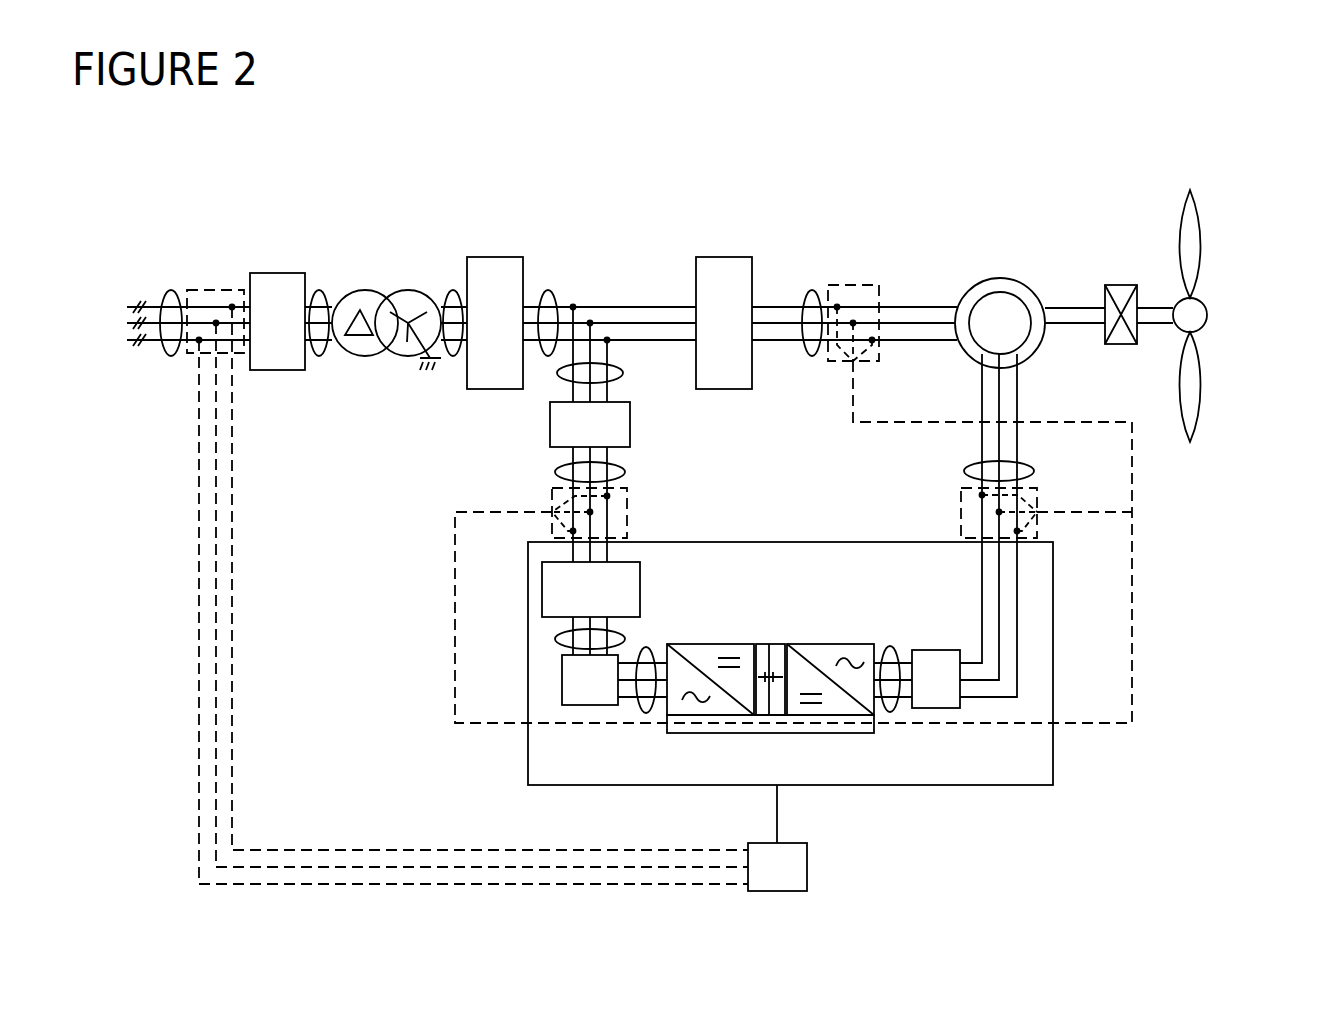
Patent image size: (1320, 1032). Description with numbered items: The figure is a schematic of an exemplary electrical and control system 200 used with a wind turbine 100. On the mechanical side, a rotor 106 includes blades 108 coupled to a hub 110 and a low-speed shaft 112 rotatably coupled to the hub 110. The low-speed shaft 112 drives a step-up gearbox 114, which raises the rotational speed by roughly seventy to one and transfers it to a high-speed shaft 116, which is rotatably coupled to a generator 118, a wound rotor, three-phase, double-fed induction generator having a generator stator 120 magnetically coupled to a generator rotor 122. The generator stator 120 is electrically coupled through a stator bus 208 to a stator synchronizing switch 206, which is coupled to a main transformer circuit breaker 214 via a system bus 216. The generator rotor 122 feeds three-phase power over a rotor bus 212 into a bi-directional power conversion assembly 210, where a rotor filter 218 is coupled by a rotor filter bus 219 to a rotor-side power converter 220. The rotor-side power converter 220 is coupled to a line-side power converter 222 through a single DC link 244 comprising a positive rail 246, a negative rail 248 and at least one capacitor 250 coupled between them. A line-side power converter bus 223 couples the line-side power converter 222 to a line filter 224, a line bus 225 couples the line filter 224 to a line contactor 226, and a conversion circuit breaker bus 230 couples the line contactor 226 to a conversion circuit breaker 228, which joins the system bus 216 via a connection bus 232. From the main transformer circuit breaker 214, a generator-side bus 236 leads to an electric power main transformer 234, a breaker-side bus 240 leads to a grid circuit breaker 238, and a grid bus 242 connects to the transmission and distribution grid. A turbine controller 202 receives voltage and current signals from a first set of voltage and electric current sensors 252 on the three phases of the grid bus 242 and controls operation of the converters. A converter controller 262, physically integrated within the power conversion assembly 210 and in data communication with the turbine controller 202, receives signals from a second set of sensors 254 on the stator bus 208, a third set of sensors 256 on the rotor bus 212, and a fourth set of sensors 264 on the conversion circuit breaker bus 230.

The wind turbine 100 is at (1177, 172).
The rotor 106 is at (1215, 292).
The blades 108 is at (1200, 250).
The hub 110 is at (1208, 315).
The low-speed shaft 112 is at (1153, 306).
The step-up gearbox 114 is at (1118, 285).
The high-speed shaft 116 is at (1073, 305).
The generator 118 is at (1001, 275).
The generator stator 120 is at (998, 277).
The generator rotor 122 is at (992, 305).
The electrical and control system 200 is at (222, 157).
The turbine controller 202 is at (757, 880).
The stator synchronizing switch 206 is at (724, 257).
The stator bus 208 is at (812, 290).
The power conversion assembly 210 is at (1053, 658).
The rotor bus 212 is at (1034, 471).
The main transformer circuit breaker 214 is at (493, 257).
The system bus 216 is at (548, 290).
The rotor filter 218 is at (932, 660).
The rotor filter bus 219 is at (890, 647).
The rotor-side power converter 220 is at (878, 717).
The line-side power converter 222 is at (670, 720).
The line-side power converter bus 223 is at (648, 647).
The line filter 224 is at (562, 680).
The line bus 225 is at (555, 639).
The line contactor 226 is at (542, 590).
The conversion circuit breaker 228 is at (630, 422).
The conversion circuit breaker bus 230 is at (622, 472).
The connection bus 232 is at (622, 373).
The electric power main transformer 234 is at (403, 290).
The generator-side bus 236 is at (453, 285).
The grid circuit breaker 238 is at (270, 273).
The breaker-side bus 240 is at (319, 290).
The grid bus 242 is at (171, 290).
The DC link 244 is at (751, 604).
The positive rail 246 is at (774, 648).
The negative rail 248 is at (778, 722).
The capacitor 250 is at (765, 672).
The first set of voltage and electric current sensors 252 is at (188, 365).
The second set of voltage and electric current sensors 254 is at (868, 283).
The third set of voltage and electric current sensors 256 is at (948, 511).
The converter controller 262 is at (832, 722).
The fourth set of voltage and electric current sensors 264 is at (627, 512).